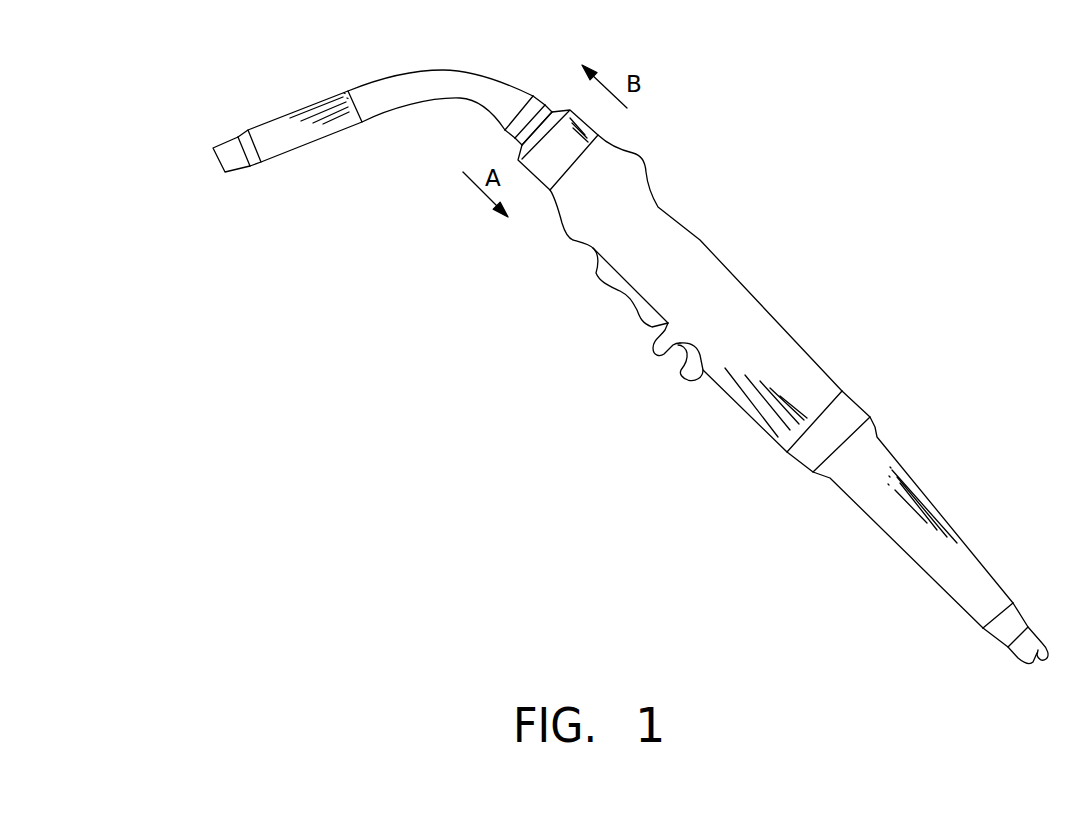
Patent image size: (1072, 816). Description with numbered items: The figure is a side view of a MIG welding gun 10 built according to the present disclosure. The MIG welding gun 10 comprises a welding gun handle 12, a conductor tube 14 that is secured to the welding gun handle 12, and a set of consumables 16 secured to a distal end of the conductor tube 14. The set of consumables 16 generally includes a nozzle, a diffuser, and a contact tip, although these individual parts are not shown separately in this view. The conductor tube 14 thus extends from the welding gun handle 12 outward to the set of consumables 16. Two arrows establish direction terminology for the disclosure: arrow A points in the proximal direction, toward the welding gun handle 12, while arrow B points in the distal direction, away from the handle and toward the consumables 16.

The MIG welding gun 10 is at (790, 110).
The welding gun handle 12 is at (770, 325).
The conductor tube 14 is at (443, 77).
The set of consumables 16 is at (267, 116).